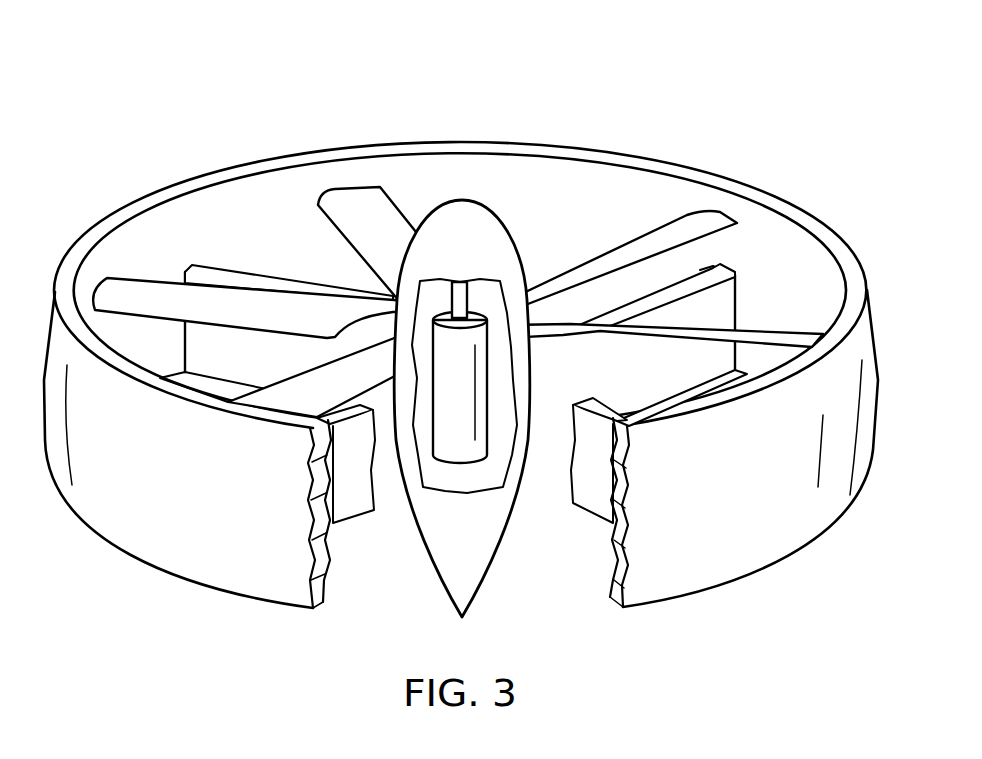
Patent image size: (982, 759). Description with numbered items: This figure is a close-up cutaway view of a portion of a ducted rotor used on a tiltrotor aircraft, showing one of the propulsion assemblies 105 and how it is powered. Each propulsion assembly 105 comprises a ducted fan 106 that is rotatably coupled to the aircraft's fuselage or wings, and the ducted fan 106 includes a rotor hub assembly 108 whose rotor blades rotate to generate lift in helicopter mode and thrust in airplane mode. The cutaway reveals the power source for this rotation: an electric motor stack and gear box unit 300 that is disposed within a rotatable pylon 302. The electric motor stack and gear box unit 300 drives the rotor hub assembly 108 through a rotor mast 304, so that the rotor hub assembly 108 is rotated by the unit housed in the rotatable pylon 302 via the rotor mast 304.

The propulsion assembly 105 is at (628, 79).
The ducted fan 106 is at (228, 158).
The rotor assembly 108 is at (453, 190).
The electric motor stack and gear box unit 300 is at (452, 472).
The rotatable pylon 302 is at (490, 363).
The rotor mast 304 is at (498, 280).